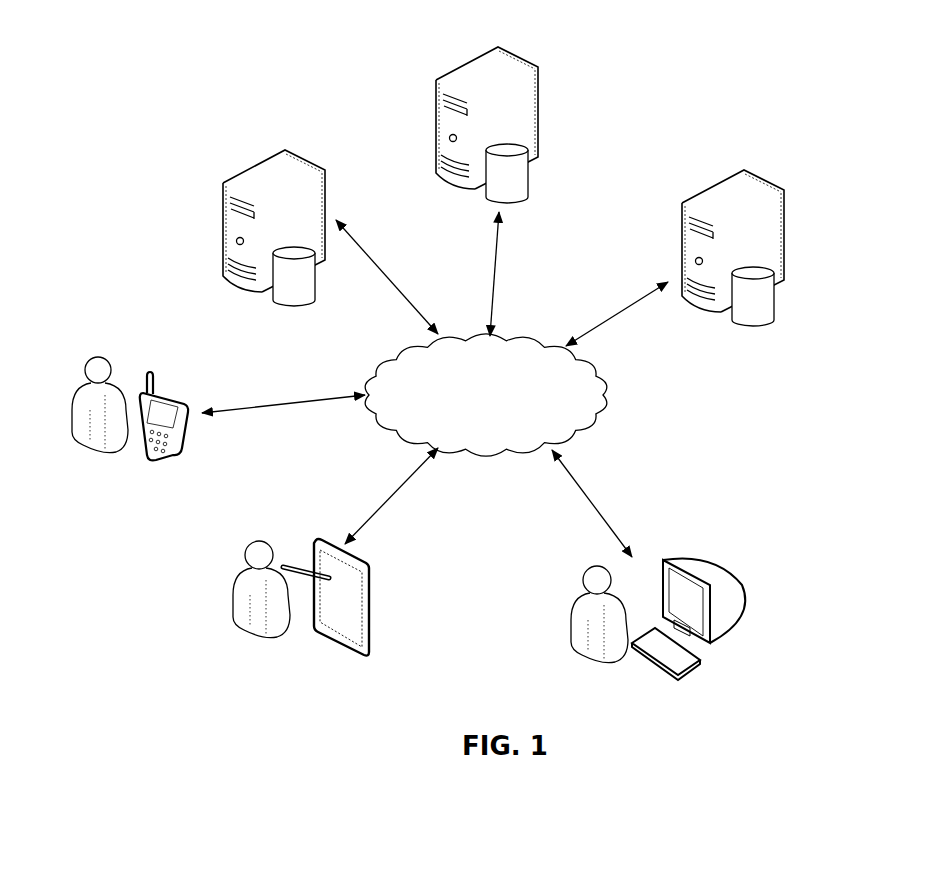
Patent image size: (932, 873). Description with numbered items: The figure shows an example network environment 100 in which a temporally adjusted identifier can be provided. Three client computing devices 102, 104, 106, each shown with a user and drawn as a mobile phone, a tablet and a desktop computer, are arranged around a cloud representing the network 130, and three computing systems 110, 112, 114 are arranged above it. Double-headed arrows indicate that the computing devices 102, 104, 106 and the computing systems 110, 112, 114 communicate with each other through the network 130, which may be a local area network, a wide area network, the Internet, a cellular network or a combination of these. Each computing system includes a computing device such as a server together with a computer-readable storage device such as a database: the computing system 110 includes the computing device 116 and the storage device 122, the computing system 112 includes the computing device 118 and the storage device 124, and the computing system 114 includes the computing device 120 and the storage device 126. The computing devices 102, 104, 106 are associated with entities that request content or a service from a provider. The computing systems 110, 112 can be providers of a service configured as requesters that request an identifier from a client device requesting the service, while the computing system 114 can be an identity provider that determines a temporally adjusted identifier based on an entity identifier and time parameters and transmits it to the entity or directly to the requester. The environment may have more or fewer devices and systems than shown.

The network environment 100 is at (897, 76).
The computing device 102 is at (170, 393).
The computing device 104 is at (362, 560).
The computing device 106 is at (705, 562).
The computing system 110 is at (223, 281).
The computing system 112 is at (436, 177).
The computing system 114 is at (690, 306).
The computing device 116 is at (263, 225).
The computing device 118 is at (476, 124).
The computing device 120 is at (731, 251).
The computer-readable storage device 122 is at (300, 305).
The computer-readable storage device 124 is at (515, 203).
The computer-readable storage device 126 is at (765, 325).
The network 130 is at (503, 404).